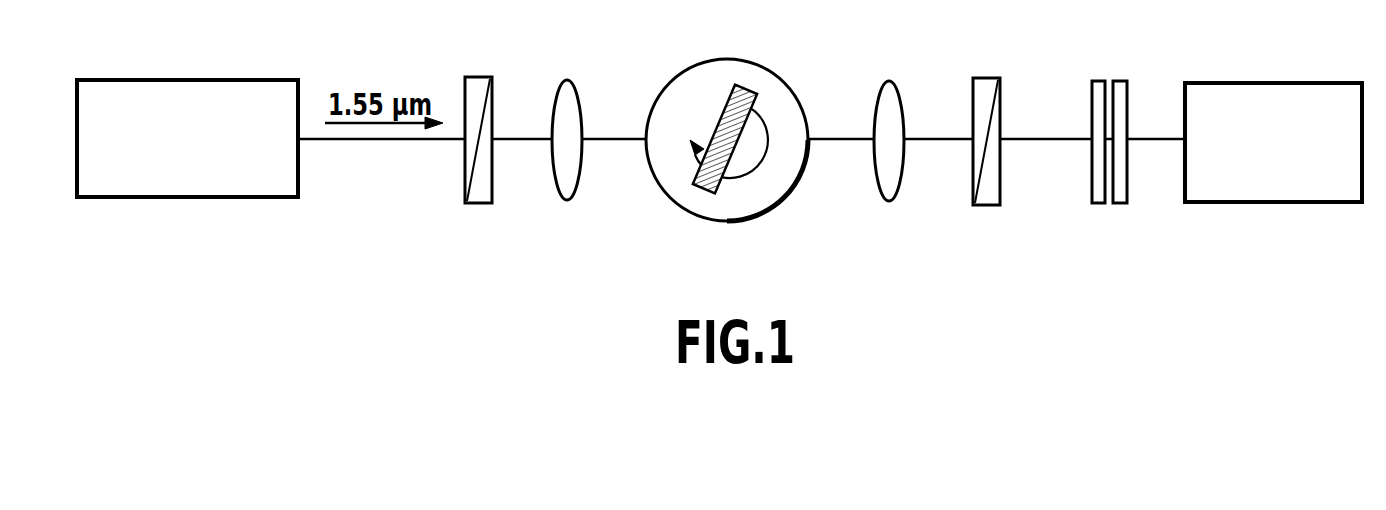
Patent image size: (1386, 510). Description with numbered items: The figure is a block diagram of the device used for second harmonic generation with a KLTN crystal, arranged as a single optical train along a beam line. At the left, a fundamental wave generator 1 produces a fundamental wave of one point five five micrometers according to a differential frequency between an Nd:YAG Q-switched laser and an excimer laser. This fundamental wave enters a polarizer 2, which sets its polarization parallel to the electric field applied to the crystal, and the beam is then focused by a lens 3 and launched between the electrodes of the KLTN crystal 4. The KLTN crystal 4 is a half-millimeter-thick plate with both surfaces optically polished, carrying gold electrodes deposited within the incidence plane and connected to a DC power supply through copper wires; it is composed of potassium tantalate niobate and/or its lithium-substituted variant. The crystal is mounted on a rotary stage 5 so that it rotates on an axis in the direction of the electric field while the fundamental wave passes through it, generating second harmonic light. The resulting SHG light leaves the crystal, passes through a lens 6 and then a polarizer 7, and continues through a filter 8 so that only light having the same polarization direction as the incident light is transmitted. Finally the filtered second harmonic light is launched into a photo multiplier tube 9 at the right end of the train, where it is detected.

The fundamental wave generator 1 is at (257, 80).
The polarizer 2 is at (482, 77).
The lens 3 is at (568, 80).
The KLTN crystal 4 is at (730, 102).
The rotary stage 5 is at (731, 59).
The lens 6 is at (889, 82).
The polarizer 7 is at (990, 78).
The filter 8 is at (1112, 81).
The photo multiplier tube 9 is at (1315, 83).